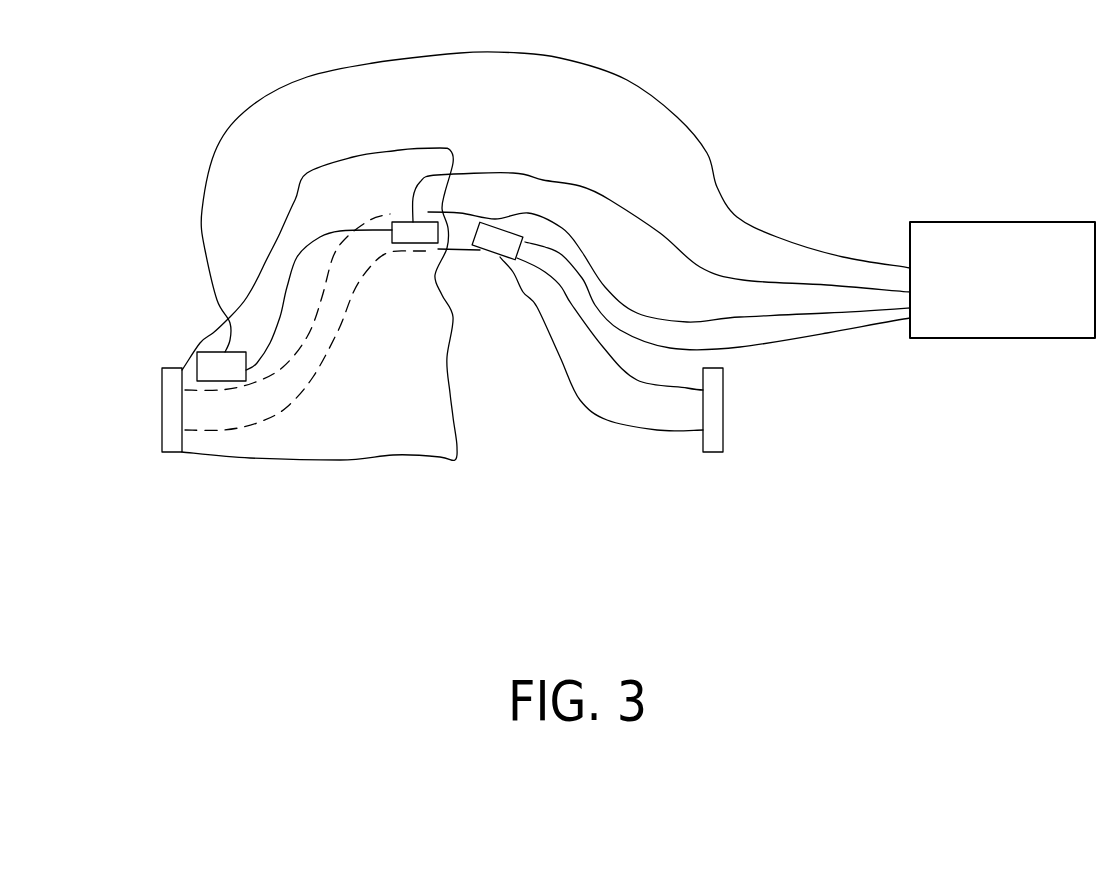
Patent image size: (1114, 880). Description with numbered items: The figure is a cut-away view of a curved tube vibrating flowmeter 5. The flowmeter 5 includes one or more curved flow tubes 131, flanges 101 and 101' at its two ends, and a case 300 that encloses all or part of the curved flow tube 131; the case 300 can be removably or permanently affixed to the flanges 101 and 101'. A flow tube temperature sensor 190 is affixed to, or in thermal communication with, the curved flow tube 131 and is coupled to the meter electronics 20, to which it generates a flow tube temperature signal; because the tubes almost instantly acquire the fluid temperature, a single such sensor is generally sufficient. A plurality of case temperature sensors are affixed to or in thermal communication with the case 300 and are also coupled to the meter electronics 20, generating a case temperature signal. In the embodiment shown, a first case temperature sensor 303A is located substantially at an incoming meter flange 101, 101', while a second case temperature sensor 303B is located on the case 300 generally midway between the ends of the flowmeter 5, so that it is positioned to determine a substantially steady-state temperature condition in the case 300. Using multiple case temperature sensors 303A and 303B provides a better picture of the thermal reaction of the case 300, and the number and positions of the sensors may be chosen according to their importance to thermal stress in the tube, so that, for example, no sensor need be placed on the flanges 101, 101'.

The curved tube vibrating flowmeter 5 is at (927, 475).
The meter electronics 20 is at (1018, 331).
The flange 101 is at (169, 458).
The flange 101' is at (718, 447).
The curved flow tube 131 is at (602, 413).
The flow tube temperature sensor 190 is at (492, 258).
The case 300 is at (387, 460).
The first case temperature sensor 303A is at (207, 352).
The second case temperature sensor 303B is at (413, 244).